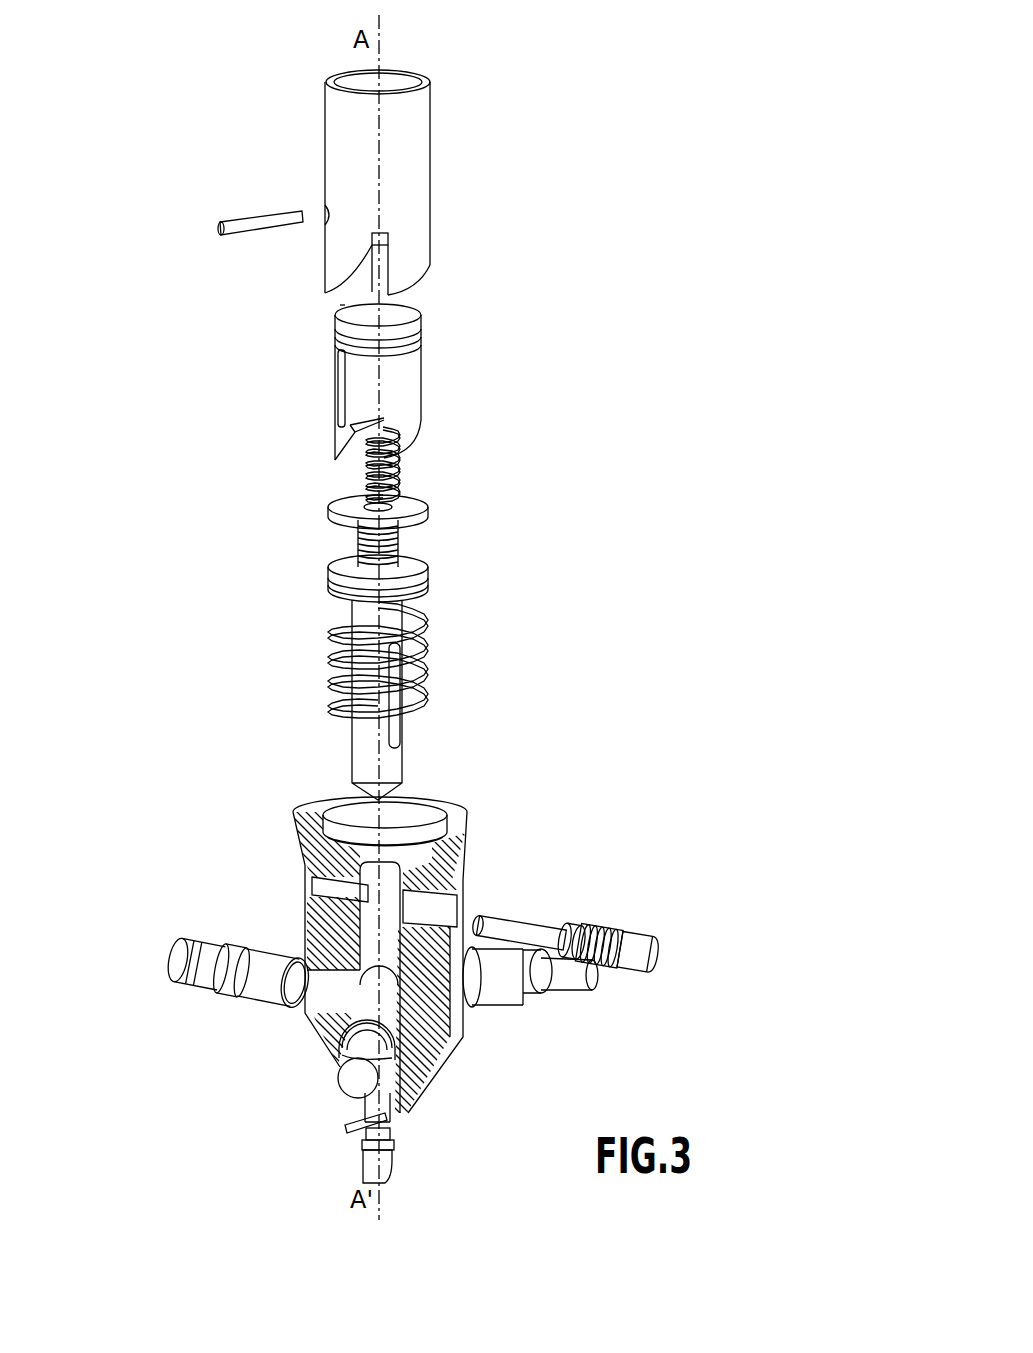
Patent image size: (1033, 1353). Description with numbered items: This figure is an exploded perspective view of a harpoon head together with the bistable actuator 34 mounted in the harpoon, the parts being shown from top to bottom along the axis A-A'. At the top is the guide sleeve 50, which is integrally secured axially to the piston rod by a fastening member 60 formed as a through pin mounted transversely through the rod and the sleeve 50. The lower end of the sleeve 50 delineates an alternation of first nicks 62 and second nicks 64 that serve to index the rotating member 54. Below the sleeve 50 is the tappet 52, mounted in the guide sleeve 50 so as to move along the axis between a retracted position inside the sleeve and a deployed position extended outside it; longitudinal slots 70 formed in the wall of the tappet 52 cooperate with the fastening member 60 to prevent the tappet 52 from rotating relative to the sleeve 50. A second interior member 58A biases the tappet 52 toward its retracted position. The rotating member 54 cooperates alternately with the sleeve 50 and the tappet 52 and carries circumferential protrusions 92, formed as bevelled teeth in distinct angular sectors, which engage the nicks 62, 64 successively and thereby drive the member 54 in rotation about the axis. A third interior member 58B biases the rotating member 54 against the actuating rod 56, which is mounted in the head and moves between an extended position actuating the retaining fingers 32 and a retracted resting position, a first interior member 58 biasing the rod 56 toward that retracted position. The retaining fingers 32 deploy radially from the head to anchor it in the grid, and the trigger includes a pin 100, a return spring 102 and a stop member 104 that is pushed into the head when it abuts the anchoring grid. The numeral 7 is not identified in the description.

The bistable actuator 34 is at (633, 82).
The fastening member 60 is at (235, 206).
The first nicks 62 is at (386, 233).
The guide sleeve 50 is at (437, 228).
The second nicks 64 is at (423, 305).
The longitudinal slots 70 is at (338, 365).
The tappet 52 is at (414, 388).
The second interior member 58A is at (400, 455).
The circumferential protrusions 92 is at (362, 493).
The rotating member 54 is at (442, 497).
The third interior member 58B is at (399, 541).
The actuating rod 56 is at (412, 634).
The first interior member 58 is at (442, 678).
The housing body 7 is at (228, 1046).
The retaining fingers 32 is at (172, 982).
The pin 100 is at (535, 910).
The return spring 102 is at (617, 928).
The stop member 104 is at (672, 953).